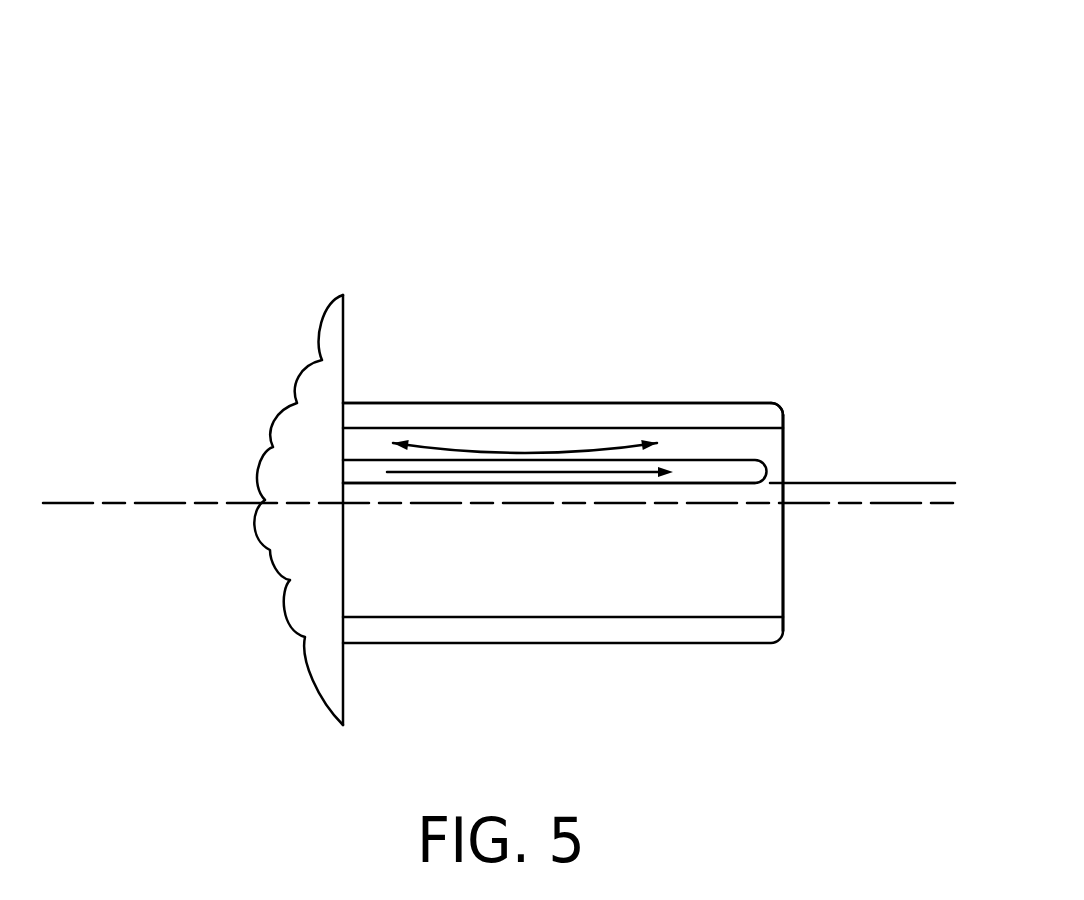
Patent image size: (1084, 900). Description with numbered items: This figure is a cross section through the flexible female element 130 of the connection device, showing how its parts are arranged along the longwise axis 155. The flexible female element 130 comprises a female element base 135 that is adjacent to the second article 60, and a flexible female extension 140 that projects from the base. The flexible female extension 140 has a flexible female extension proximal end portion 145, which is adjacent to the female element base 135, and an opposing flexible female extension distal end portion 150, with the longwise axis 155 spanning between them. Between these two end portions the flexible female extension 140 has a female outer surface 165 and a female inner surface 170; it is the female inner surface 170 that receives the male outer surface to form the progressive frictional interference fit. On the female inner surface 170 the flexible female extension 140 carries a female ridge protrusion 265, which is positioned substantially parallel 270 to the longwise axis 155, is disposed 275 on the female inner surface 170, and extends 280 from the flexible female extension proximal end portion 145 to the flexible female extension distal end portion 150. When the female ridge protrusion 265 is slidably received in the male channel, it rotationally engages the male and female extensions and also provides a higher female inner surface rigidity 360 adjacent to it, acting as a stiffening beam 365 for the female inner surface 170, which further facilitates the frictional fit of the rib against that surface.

The flexible female element 130 is at (546, 118).
The female element base 135 is at (332, 563).
The second article 60 is at (321, 485).
The longwise axis 155 is at (70, 503).
The flexible female extension proximal end portion 145 is at (393, 403).
The female outer surface 165 is at (552, 403).
The flexible female extension 140 is at (587, 403).
The female inner surface 170 is at (735, 425).
The flexible female extension distal end portion 150 is at (772, 403).
The higher female inner surface rigidity 360 is at (467, 452).
The female ridge protrusion 265 is at (697, 473).
The disposed 275 is at (640, 483).
The extends 280 is at (582, 580).
The stiffening beam 365 is at (570, 472).
The substantially parallel 270 is at (933, 435).